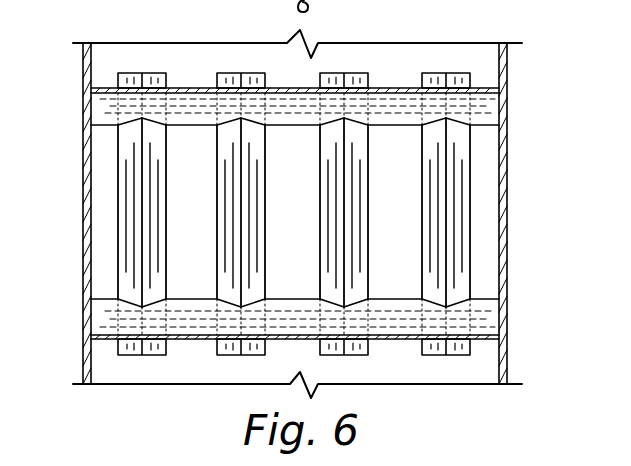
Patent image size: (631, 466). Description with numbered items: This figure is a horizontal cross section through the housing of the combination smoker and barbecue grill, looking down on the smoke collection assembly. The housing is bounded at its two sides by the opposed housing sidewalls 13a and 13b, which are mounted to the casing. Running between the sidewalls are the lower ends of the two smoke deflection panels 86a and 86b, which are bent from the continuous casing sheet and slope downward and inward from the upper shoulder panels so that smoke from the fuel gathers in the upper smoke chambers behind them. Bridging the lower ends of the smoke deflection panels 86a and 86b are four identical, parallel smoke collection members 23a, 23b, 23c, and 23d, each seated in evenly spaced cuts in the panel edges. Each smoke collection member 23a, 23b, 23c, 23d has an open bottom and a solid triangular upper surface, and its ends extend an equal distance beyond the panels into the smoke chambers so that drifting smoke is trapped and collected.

The housing sidewall 13a is at (82, 182).
The housing sidewall 13b is at (508, 180).
The smoke collection member 23a is at (160, 195).
The smoke collection member 23b is at (266, 197).
The smoke collection member 23c is at (358, 208).
The smoke collection member 23d is at (433, 212).
The smoke deflection panel 86a is at (485, 107).
The smoke deflection panel 86b is at (480, 318).